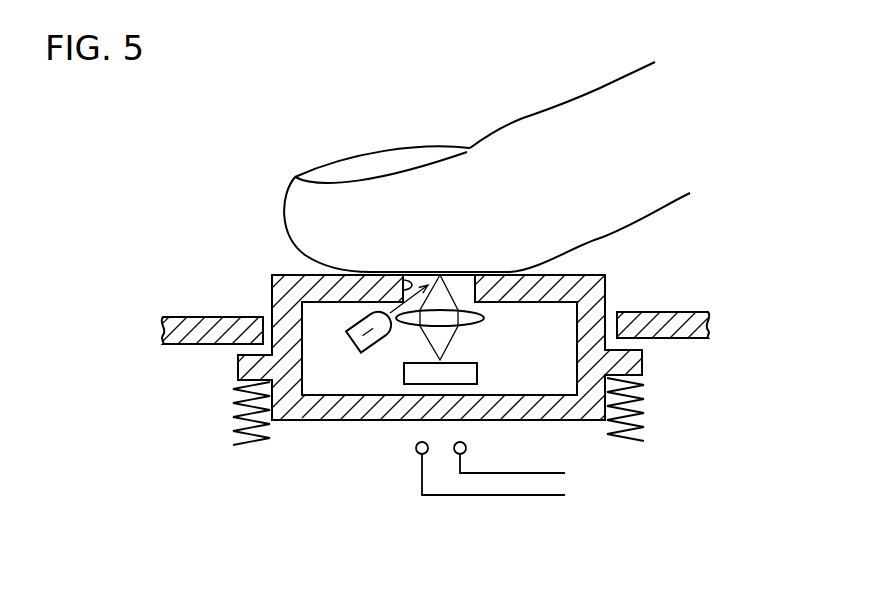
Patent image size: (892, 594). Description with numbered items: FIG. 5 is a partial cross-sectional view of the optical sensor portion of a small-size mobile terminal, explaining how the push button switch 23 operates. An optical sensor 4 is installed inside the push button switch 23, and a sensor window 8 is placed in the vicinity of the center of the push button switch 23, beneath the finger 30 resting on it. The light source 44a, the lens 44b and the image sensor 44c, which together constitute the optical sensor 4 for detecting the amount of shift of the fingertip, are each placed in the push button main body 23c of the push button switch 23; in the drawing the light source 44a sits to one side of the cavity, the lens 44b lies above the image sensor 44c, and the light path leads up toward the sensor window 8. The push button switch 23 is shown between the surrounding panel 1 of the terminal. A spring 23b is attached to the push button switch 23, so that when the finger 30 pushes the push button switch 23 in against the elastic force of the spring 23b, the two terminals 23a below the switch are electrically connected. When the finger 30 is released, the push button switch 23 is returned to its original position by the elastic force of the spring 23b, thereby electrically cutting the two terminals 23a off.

The panel 1 is at (199, 331).
The optical sensor 4 is at (366, 416).
The sensor window 8 is at (404, 286).
The push button switch 23 is at (592, 273).
The terminals 23a is at (428, 443).
The spring 23b is at (236, 404).
The push button main body 23c is at (593, 305).
The finger 30 is at (493, 203).
The light source 44a is at (368, 330).
The lens 44b is at (413, 318).
The image sensor 44c is at (425, 373).